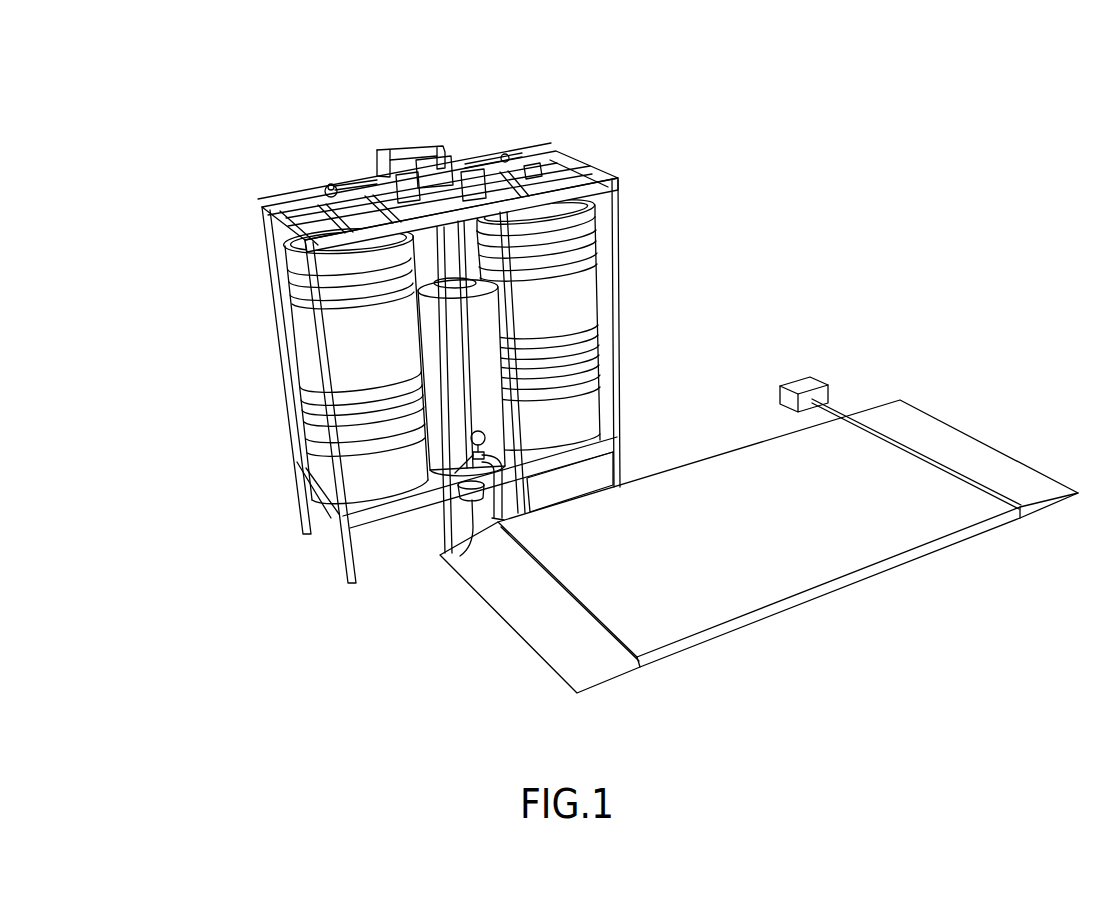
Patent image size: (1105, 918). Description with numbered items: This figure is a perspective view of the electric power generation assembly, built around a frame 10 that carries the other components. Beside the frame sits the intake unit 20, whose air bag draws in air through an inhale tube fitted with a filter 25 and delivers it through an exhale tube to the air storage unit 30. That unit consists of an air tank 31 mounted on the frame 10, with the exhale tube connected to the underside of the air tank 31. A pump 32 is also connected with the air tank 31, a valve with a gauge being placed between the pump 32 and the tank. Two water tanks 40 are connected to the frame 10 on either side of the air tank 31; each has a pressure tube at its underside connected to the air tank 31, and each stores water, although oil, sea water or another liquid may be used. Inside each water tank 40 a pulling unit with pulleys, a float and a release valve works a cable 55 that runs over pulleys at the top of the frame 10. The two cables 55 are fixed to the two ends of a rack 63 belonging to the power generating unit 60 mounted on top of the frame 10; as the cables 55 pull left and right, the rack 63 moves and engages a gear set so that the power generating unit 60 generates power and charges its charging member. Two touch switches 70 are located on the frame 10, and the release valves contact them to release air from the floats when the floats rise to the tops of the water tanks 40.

The frame 10 is at (402, 356).
The intake unit 20 is at (880, 585).
The filter 25 is at (808, 376).
The air storage unit 30 is at (466, 400).
The air tank 31 is at (325, 425).
The pump 32 is at (460, 556).
The water tanks 40 is at (307, 349).
The cable 55 is at (302, 212).
The power generating unit 60 is at (407, 140).
The rack 63 is at (477, 150).
The touch switches 70 is at (312, 200).